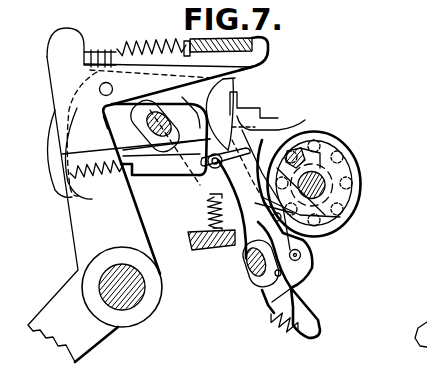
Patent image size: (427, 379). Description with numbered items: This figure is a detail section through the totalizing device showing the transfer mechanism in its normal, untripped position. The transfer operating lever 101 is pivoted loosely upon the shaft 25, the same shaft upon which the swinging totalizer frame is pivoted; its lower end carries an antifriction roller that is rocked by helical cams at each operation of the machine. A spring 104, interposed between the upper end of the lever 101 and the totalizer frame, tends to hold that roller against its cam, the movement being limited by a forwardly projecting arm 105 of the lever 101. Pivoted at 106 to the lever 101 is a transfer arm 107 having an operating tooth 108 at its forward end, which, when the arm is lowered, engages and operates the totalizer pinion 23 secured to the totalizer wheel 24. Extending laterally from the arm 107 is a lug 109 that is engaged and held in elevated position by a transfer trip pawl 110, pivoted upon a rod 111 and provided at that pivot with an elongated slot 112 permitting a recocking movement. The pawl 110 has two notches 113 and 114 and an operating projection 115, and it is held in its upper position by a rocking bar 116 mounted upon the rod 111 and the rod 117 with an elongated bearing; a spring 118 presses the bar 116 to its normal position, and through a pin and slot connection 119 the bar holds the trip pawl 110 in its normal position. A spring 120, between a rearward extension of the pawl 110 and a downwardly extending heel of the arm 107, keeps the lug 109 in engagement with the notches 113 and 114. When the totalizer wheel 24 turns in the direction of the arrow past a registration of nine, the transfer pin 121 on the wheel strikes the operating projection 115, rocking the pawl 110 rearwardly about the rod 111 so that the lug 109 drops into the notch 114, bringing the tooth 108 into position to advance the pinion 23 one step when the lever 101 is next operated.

The transfer operating lever 101 is at (140, 195).
The spring 104 is at (122, 44).
The forwardly projecting arm 105 is at (268, 58).
The pivot 106 is at (99, 89).
The transfer arm 107 is at (103, 124).
The operating tooth 108 is at (306, 140).
The lug 109 is at (245, 110).
The transfer trip pawl 110 is at (205, 178).
The rod 111 is at (258, 252).
The elongated slot 112 is at (245, 256).
The notch 113 is at (298, 148).
The notch 114 is at (222, 152).
The operating projection 115 is at (342, 214).
The rocking bar 116 is at (208, 198).
The rod 117 is at (154, 128).
The spring 118 is at (192, 238).
The pin and slot connection 119 is at (227, 90).
The spring 120 is at (72, 195).
The transfer pin 121 is at (312, 240).
The totalizer pinion 23 is at (342, 183).
The totalizer wheel 24 is at (352, 157).
The shaft 25 is at (143, 295).